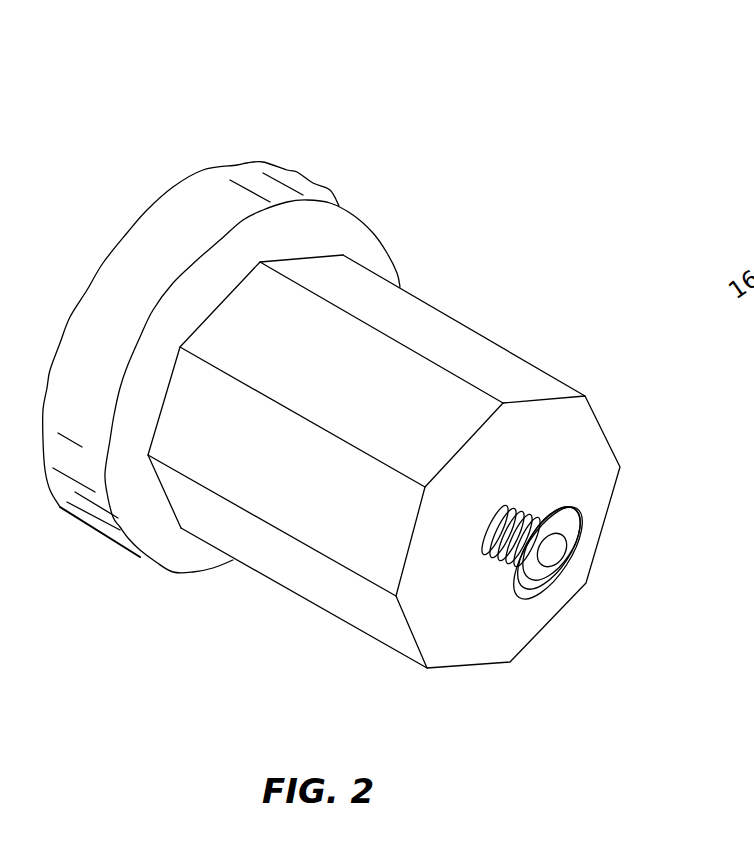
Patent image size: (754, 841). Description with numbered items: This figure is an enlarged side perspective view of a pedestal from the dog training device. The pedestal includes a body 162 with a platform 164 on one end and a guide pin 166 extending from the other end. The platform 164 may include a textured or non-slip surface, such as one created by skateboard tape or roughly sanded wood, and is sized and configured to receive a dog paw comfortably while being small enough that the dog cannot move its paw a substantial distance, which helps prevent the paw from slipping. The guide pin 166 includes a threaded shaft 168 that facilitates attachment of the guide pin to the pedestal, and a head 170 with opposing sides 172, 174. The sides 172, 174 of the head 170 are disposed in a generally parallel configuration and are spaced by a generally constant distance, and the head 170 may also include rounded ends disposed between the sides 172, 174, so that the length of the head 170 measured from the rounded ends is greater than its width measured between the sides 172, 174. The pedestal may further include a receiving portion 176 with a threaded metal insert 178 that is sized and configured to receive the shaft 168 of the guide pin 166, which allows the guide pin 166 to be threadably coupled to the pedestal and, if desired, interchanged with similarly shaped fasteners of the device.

The body 162 is at (423, 337).
The platform 164 is at (252, 186).
The guide pin 166 is at (501, 565).
The threaded shaft 168 is at (540, 513).
The head 170 is at (584, 526).
The side 172 is at (545, 581).
The side 174 is at (578, 496).
The receiving portion 176 is at (486, 502).
The threaded metal insert 178 is at (508, 500).